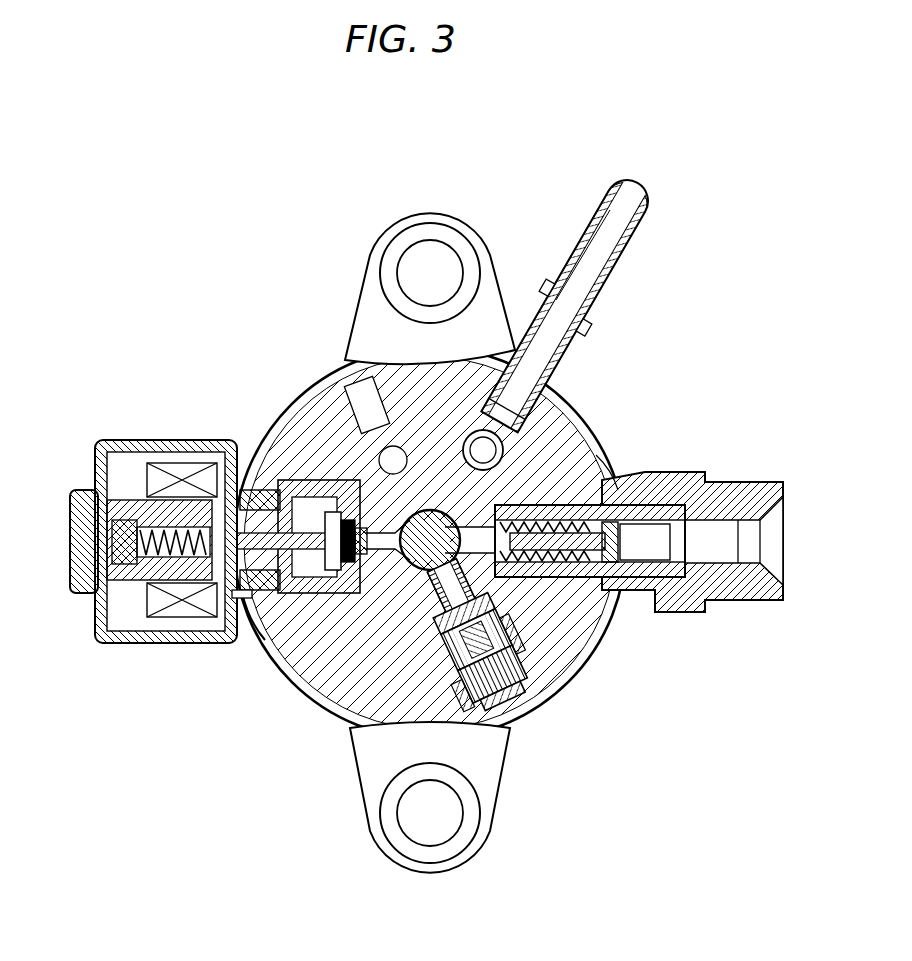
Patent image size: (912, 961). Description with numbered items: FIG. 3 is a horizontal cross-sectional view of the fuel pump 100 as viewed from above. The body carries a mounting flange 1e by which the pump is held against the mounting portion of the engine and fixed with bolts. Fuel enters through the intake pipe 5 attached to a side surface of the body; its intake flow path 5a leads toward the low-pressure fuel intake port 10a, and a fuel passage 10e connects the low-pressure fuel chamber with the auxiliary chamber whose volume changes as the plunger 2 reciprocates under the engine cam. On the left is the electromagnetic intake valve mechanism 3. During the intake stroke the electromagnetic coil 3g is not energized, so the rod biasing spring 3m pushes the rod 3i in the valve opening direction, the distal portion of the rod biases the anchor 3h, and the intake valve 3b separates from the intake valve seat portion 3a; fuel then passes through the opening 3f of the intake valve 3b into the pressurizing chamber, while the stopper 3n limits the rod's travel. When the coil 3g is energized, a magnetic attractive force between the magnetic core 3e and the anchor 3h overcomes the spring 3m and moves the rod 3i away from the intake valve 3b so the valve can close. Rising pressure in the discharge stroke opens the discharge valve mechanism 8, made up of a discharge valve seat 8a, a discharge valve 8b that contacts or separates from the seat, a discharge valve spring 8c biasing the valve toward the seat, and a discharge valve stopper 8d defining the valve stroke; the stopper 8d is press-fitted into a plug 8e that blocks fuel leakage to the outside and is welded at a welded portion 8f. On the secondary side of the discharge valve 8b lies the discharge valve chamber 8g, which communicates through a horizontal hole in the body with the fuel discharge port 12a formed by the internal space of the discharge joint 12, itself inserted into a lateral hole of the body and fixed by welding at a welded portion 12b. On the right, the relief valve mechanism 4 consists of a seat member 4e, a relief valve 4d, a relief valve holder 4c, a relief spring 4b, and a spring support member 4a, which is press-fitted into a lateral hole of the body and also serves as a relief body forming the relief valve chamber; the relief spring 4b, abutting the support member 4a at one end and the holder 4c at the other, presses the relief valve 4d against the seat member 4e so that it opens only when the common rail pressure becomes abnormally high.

The hydraulic control device 100 is at (484, 170).
The mounting flange 1e is at (373, 317).
The plunger 2 is at (283, 672).
The electromagnetic intake valve mechanism 3 is at (175, 440).
The intake valve seat portion 3a is at (312, 512).
The intake valve 3b is at (333, 520).
The magnetic core 3e is at (170, 567).
The opening 3f is at (252, 480).
The electromagnetic coil 3g is at (233, 527).
The anchor 3h is at (200, 560).
The rod 3i is at (217, 533).
The rod biasing spring 3m is at (190, 545).
The stopper 3n is at (262, 615).
The relief valve mechanism 4 is at (780, 645).
The spring support member 4a is at (500, 553).
The relief spring 4b is at (580, 560).
The relief valve holder 4c is at (600, 547).
The relief valve 4d is at (617, 537).
The seat member 4e is at (640, 537).
The intake pipe 5 is at (640, 230).
The intake flow path 5a is at (510, 445).
The discharge valve mechanism 8 is at (350, 776).
The discharge valve seat 8a is at (440, 600).
The discharge valve 8b is at (455, 620).
The discharge valve spring 8c is at (470, 640).
The discharge valve stopper 8d is at (490, 660).
The plug 8e is at (505, 690).
The welded portion 8f is at (545, 700).
The discharge valve chamber 8g is at (540, 640).
The low-pressure fuel intake port 10a is at (595, 265).
The fuel passage 10e is at (345, 410).
The discharge joint 12 is at (705, 470).
The fuel discharge port 12a is at (752, 530).
The welded portion 12b is at (612, 480).